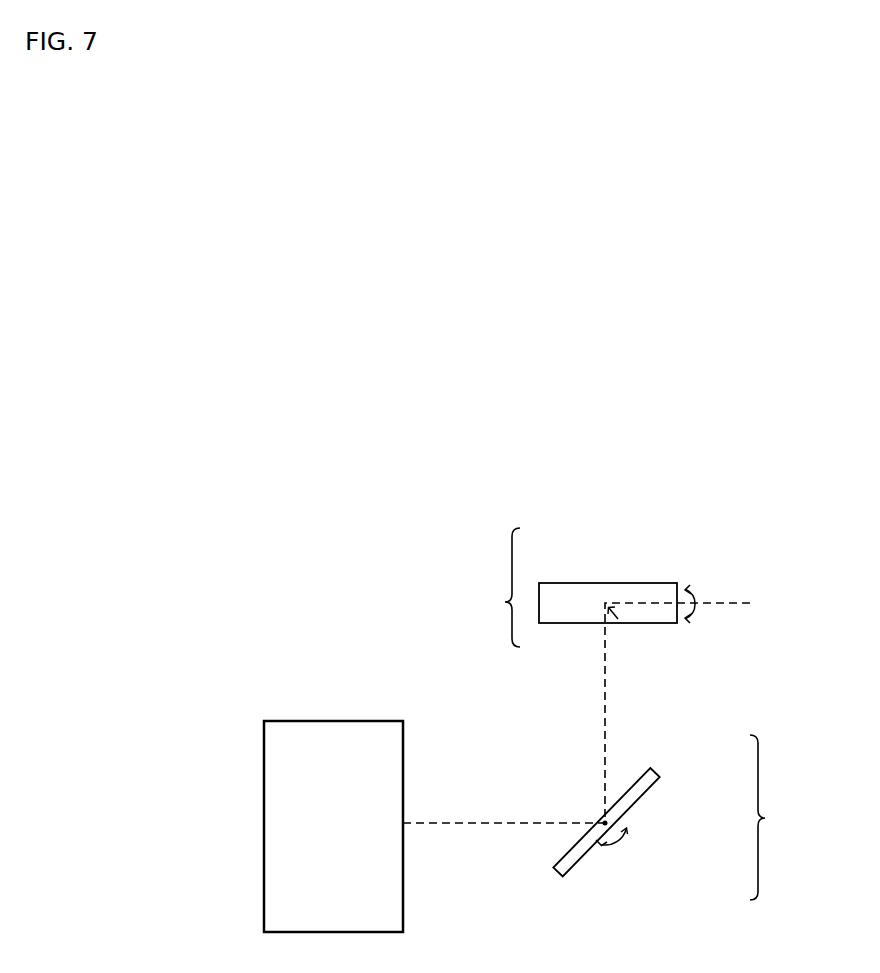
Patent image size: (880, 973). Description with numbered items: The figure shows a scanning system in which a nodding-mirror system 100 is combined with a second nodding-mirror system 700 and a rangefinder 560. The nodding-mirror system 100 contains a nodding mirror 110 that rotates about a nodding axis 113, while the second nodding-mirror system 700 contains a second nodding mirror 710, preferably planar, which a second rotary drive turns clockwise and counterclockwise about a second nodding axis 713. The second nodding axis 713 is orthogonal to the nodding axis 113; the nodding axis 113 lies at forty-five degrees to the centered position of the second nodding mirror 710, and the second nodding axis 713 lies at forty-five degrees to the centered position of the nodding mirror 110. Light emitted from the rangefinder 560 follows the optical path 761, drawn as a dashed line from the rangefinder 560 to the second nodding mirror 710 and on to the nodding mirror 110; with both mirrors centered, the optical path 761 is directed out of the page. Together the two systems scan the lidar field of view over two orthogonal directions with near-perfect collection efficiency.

The nodding-mirror system 100 is at (489, 587).
The nodding mirror 110 is at (606, 581).
The nodding axis 113 is at (733, 603).
The optical path 761 is at (619, 619).
The rangefinder 560 is at (264, 825).
The second nodding-mirror system 700 is at (784, 817).
The second nodding mirror 710 is at (657, 773).
The second nodding axis 713 is at (620, 847).